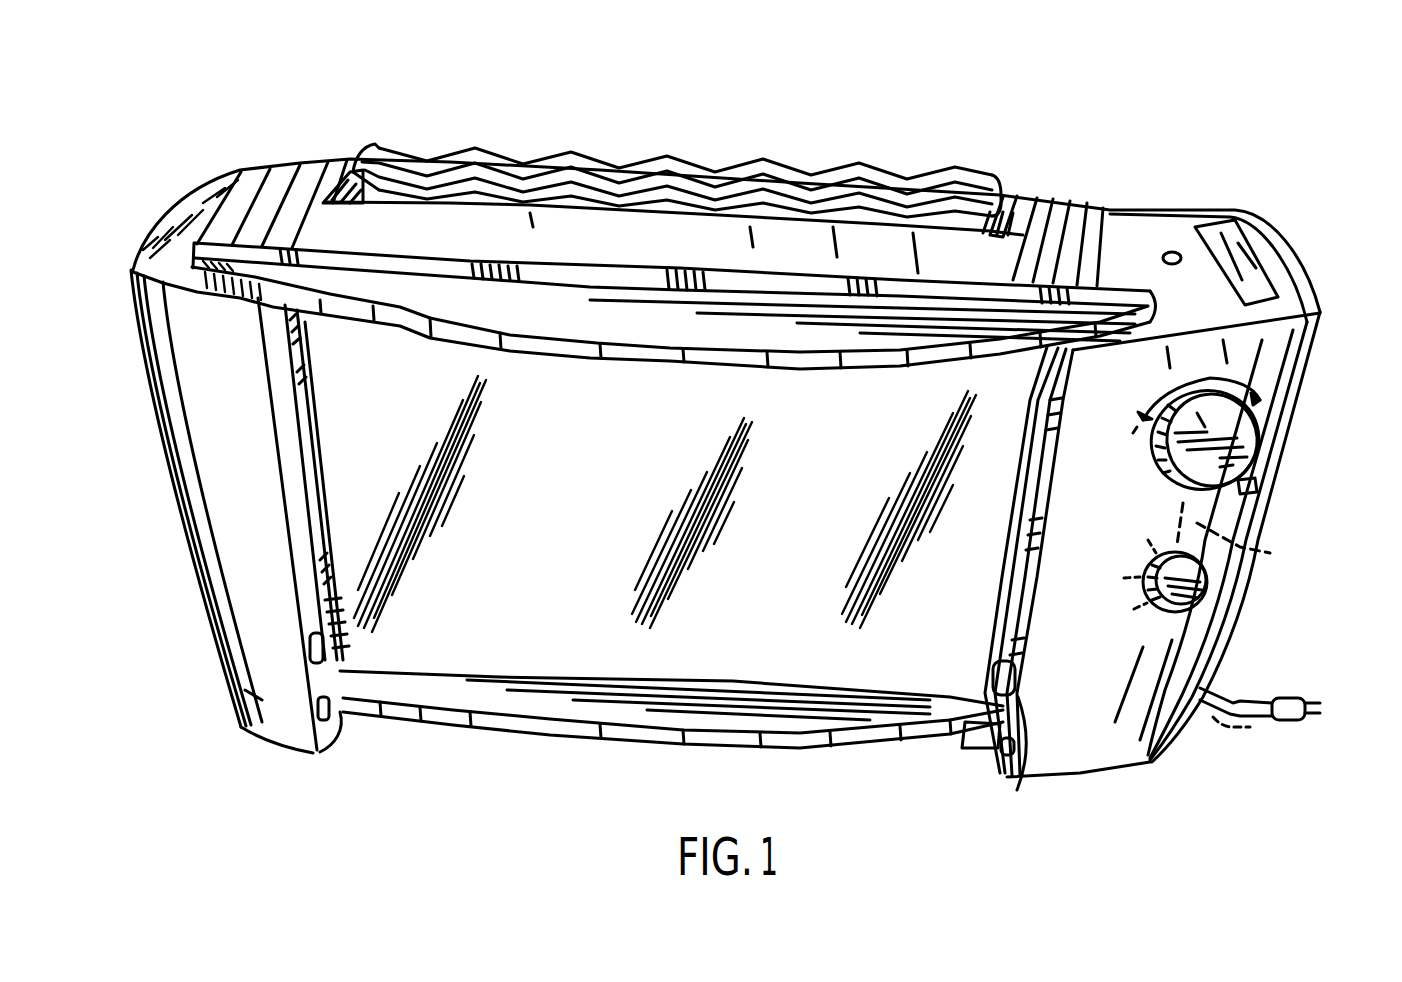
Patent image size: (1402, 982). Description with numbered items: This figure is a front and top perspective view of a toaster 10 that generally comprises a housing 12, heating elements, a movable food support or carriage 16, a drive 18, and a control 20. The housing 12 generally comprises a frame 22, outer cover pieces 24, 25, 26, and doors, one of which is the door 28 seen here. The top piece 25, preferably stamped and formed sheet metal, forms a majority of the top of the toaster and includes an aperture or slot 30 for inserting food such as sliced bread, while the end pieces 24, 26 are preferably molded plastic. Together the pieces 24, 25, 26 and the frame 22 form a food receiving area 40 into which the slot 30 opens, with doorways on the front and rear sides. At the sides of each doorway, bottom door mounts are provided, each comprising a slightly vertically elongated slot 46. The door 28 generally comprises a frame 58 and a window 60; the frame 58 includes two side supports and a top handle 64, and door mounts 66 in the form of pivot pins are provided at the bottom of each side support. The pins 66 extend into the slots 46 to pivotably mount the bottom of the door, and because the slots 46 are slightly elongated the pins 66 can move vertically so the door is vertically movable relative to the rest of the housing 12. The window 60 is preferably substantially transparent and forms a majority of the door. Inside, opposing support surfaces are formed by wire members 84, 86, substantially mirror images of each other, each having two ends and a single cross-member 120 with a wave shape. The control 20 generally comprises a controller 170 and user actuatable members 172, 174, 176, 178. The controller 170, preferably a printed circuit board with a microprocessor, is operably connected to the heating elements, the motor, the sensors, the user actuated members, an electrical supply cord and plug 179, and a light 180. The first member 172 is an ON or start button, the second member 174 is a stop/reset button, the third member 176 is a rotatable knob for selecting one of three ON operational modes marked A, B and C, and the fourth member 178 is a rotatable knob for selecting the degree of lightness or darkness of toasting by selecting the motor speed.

The toaster 10 is at (1146, 75).
The housing 12 is at (205, 170).
The movable food support or carriage 16 is at (373, 146).
The drive 18 is at (200, 587).
The control 20 is at (1218, 214).
The frame 22 is at (820, 733).
The end piece 24 is at (162, 208).
The top piece 25 is at (312, 178).
The end piece 26 is at (1135, 212).
The door 28 is at (458, 662).
The slot 30 is at (1010, 193).
The food receiving area 40 is at (860, 727).
The vertically elongated slot 46 is at (303, 652).
The frame 58 is at (786, 365).
The window 60 is at (553, 664).
The top handle 64 is at (580, 355).
The door mount 66 is at (340, 708).
The wire member 84 is at (477, 150).
The wire member 86 is at (550, 192).
The cross-member 120 is at (597, 162).
The controller 170 is at (1270, 553).
The ON button 172 is at (1273, 260).
The stop/reset button 174 is at (1171, 252).
The operation function selection knob 176 is at (1190, 596).
The lightness/darkness selection knob 178 is at (1250, 437).
The electrical supply cord and plug 179 is at (1264, 716).
The light 180 is at (1256, 488).